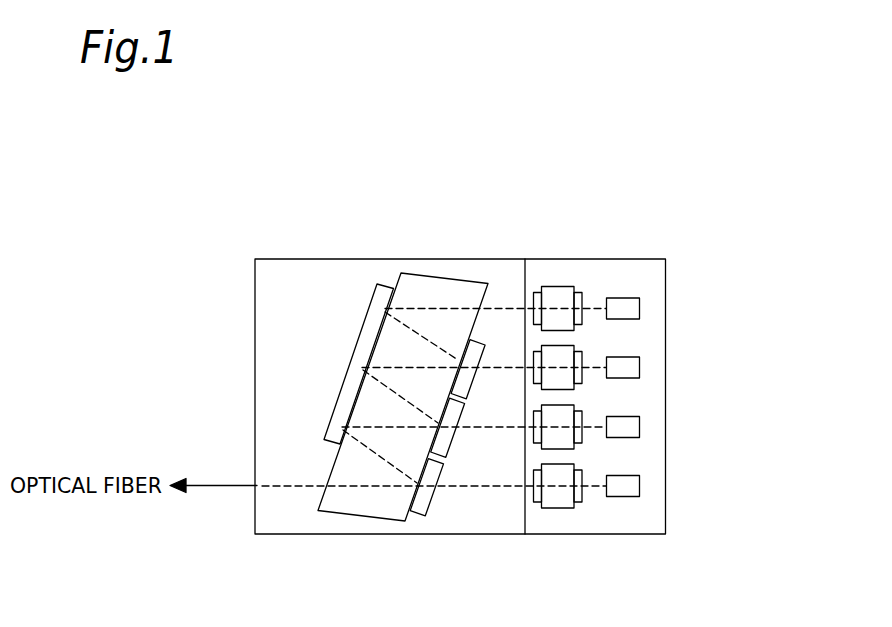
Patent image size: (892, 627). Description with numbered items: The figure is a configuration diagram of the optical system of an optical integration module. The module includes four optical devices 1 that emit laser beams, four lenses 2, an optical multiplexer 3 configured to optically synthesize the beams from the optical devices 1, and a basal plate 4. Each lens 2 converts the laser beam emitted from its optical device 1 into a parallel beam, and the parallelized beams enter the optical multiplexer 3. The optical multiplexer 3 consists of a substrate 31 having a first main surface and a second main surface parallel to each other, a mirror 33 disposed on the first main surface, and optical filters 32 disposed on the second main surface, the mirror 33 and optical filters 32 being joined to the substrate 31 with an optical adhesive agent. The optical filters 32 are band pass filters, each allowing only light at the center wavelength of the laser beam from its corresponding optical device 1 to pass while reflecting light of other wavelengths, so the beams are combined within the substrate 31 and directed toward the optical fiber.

The optical device 1 is at (640, 309).
The lens 2 is at (556, 286).
The optical multiplexer 3 is at (499, 163).
The substrate 31 is at (443, 278).
The optical filter 32 is at (436, 489).
The mirror 33 is at (352, 368).
The basal plate 4 is at (255, 377).